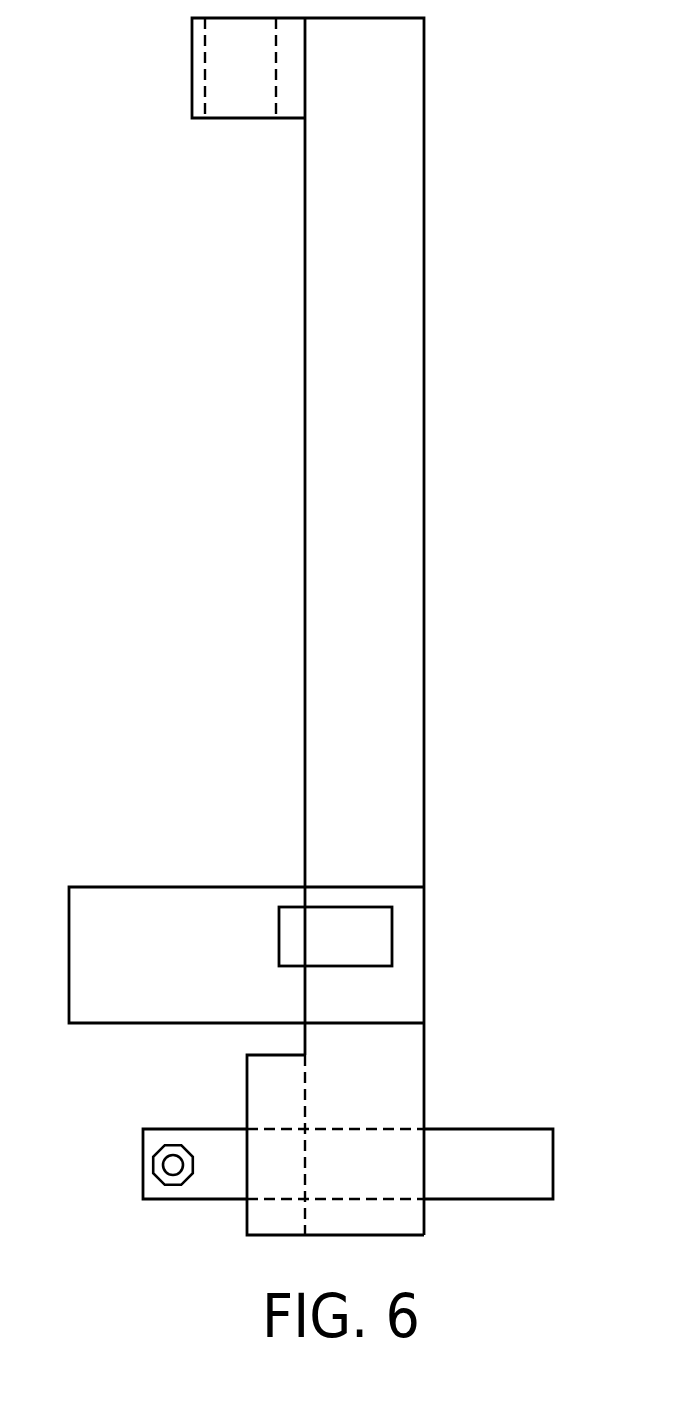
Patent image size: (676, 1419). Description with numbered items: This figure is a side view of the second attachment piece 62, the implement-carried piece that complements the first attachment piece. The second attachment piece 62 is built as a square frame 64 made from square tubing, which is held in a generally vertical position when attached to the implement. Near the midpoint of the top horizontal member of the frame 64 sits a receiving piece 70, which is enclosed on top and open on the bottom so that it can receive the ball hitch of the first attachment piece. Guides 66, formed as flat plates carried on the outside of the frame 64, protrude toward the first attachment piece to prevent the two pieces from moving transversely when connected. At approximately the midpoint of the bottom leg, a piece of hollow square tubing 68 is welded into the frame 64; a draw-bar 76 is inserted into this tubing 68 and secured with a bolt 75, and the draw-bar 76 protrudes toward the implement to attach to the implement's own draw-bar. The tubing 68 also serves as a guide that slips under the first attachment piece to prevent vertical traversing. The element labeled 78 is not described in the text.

The second attachment piece 62 is at (446, 569).
The square frame 64 is at (433, 409).
The guides 66 is at (186, 878).
The hollow square tubing 68 is at (168, 1208).
The receiving piece 70 is at (226, 128).
The bolt 75 is at (163, 1166).
The draw-bar 76 is at (515, 1209).
The slot 78 is at (368, 935).